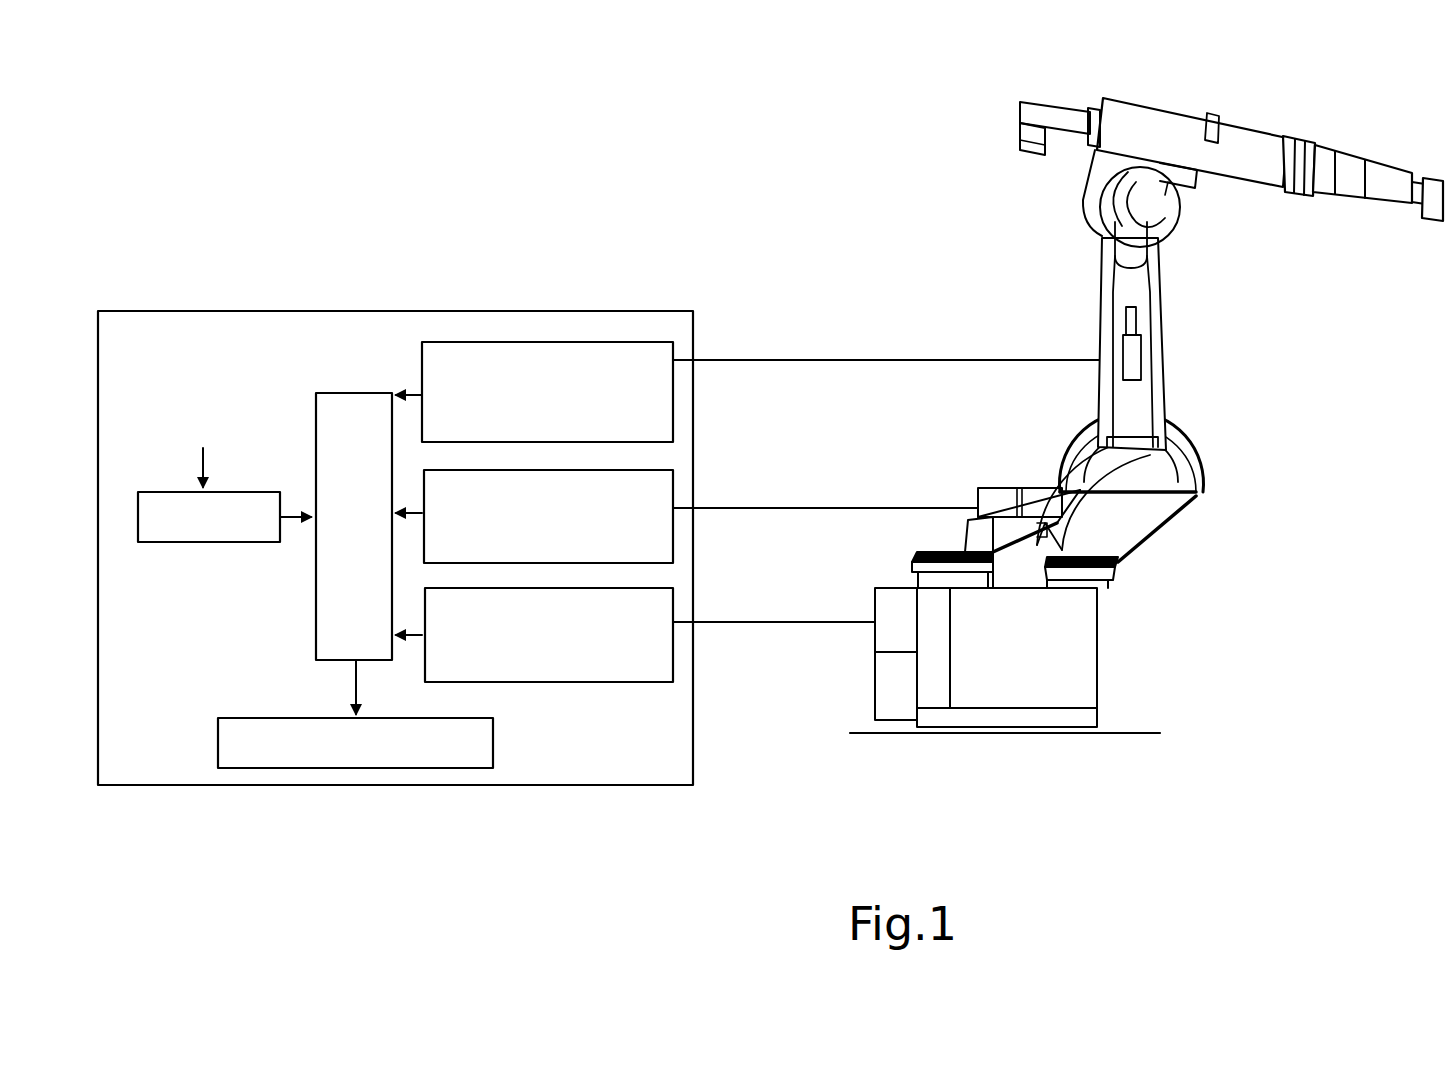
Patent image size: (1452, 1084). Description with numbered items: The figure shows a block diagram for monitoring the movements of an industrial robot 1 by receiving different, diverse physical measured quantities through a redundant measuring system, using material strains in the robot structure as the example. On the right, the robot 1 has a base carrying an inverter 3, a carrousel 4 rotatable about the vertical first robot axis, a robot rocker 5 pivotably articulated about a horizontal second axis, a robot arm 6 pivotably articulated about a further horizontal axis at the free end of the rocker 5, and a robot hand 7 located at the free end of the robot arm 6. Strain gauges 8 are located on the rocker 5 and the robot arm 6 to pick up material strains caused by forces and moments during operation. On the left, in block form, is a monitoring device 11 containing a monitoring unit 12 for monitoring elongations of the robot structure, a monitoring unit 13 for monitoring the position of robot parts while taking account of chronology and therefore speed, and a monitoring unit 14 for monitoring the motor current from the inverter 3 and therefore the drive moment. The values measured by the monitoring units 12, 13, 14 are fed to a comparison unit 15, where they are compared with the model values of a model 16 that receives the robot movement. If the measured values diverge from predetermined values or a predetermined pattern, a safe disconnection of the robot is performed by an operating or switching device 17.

The industrial robot 1 is at (1218, 575).
The inverter 3 is at (888, 686).
The carrousel 4 is at (1185, 526).
The robot rocker 5 is at (1160, 378).
The robot arm 6 is at (1247, 149).
The robot hand 7 is at (1377, 175).
The strain gauges 8 is at (1133, 312).
The monitoring device 11 is at (170, 338).
The monitoring unit 12 is at (640, 355).
The monitoring unit 13 is at (654, 500).
The monitoring unit 14 is at (660, 670).
The comparison unit 15 is at (342, 416).
The model 16 is at (165, 543).
The operating or switching device 17 is at (286, 768).